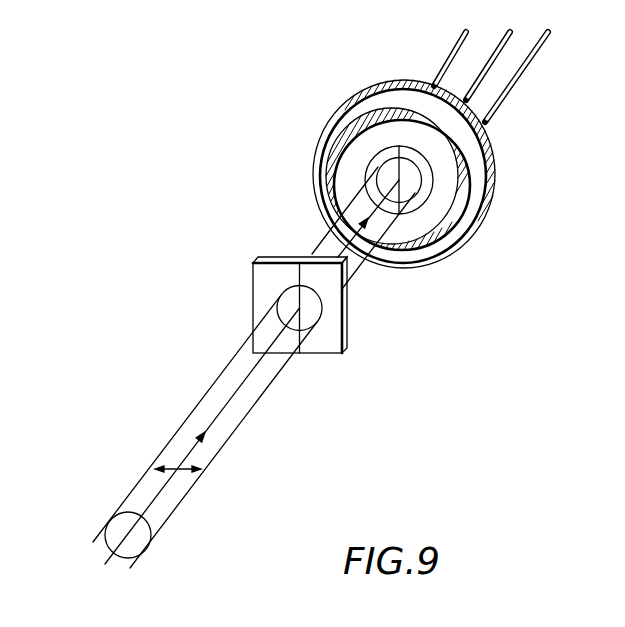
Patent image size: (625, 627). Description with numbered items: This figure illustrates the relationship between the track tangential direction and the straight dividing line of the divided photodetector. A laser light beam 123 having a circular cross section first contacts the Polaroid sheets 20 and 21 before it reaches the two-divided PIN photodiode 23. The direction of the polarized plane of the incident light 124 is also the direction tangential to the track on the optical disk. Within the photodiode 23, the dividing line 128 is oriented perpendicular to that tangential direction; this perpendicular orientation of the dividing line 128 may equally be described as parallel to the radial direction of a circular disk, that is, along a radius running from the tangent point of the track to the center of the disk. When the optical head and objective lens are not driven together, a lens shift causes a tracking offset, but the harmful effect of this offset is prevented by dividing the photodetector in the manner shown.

The 2-divided PIN photodiode 23 is at (323, 130).
The dividing line 128 is at (397, 147).
The Polaroid sheet 20 is at (333, 345).
The Polaroid sheet 21 is at (262, 275).
The laser light beam 123 is at (242, 414).
The direction of the polarized plane of the incident light 124 is at (186, 472).